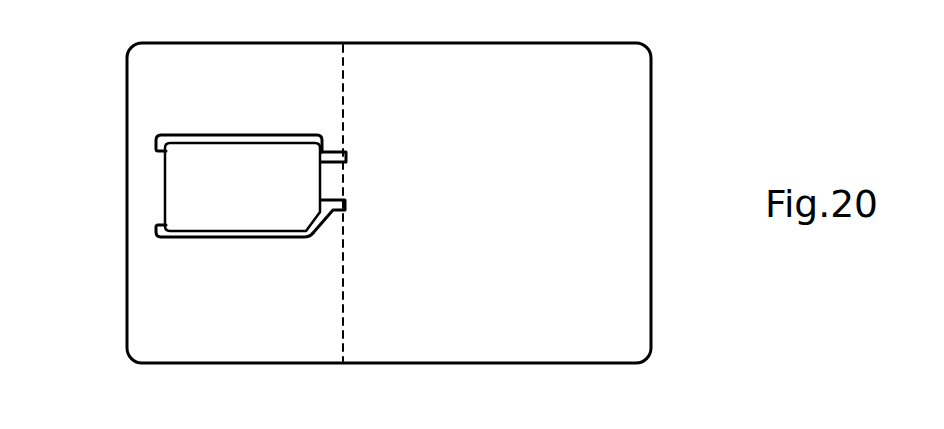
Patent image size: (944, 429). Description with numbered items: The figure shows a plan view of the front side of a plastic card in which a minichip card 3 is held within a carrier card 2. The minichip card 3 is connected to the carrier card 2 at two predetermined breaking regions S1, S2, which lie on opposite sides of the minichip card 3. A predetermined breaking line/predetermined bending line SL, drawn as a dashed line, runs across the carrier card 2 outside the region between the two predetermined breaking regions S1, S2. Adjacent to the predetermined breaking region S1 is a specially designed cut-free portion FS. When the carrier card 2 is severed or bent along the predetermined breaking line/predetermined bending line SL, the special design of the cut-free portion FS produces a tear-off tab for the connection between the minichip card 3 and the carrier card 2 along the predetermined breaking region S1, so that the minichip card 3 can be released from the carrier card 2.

The carrier card 2 is at (563, 195).
The minichip card 3 is at (250, 205).
The predetermined breaking region S2 is at (165, 183).
The predetermined breaking region S1 is at (322, 173).
The predetermined breaking line/predetermined bending line SL is at (344, 69).
The cut-free portion FS is at (315, 226).